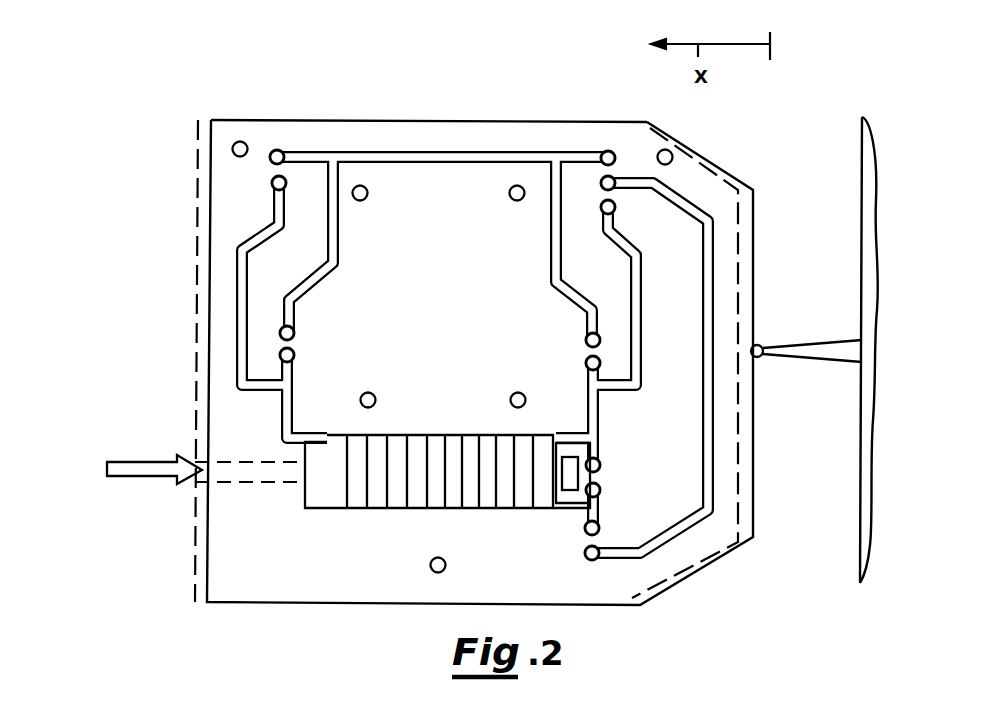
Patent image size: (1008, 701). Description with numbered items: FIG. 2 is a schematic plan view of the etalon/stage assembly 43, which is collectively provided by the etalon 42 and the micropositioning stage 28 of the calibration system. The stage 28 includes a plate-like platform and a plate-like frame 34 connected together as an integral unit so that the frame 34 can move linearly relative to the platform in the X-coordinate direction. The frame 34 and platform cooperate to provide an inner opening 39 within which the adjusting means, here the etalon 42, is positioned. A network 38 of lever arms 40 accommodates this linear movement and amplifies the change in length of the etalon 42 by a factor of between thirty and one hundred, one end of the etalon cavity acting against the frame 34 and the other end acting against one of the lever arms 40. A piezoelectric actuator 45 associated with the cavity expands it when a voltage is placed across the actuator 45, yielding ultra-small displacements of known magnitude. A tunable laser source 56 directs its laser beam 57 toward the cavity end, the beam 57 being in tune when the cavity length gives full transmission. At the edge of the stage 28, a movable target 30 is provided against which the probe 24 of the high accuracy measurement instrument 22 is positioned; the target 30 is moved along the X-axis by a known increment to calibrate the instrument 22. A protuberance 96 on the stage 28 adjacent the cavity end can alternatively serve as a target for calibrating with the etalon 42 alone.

The high accuracy measurement instrument 22 is at (863, 173).
The probe 24 is at (797, 360).
The micropositioning stage 28 is at (605, 120).
The movable target 30 is at (737, 260).
The frame 34 is at (445, 132).
The network of lever arms 38 is at (315, 140).
The inner opening 39 is at (505, 490).
The lever arms 40 is at (270, 265).
The etalon 42 is at (353, 510).
The etalon/stage assembly 43 is at (532, 113).
The piezoelectric actuator 45 is at (415, 502).
The tunable laser source 56 is at (167, 485).
The laser beam 57 is at (123, 462).
The protuberance 96 is at (567, 505).